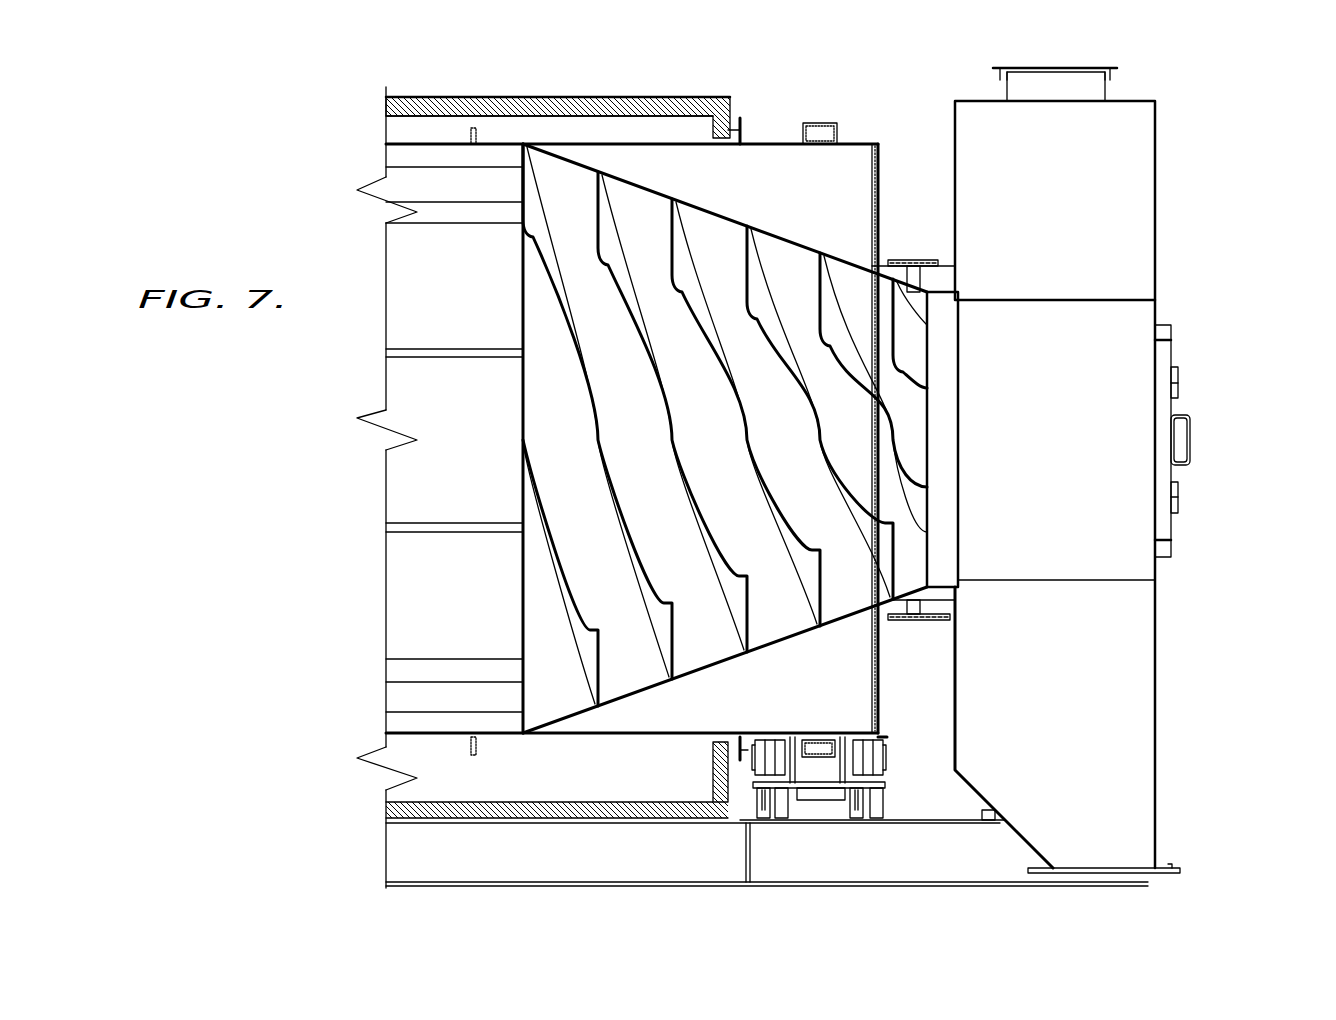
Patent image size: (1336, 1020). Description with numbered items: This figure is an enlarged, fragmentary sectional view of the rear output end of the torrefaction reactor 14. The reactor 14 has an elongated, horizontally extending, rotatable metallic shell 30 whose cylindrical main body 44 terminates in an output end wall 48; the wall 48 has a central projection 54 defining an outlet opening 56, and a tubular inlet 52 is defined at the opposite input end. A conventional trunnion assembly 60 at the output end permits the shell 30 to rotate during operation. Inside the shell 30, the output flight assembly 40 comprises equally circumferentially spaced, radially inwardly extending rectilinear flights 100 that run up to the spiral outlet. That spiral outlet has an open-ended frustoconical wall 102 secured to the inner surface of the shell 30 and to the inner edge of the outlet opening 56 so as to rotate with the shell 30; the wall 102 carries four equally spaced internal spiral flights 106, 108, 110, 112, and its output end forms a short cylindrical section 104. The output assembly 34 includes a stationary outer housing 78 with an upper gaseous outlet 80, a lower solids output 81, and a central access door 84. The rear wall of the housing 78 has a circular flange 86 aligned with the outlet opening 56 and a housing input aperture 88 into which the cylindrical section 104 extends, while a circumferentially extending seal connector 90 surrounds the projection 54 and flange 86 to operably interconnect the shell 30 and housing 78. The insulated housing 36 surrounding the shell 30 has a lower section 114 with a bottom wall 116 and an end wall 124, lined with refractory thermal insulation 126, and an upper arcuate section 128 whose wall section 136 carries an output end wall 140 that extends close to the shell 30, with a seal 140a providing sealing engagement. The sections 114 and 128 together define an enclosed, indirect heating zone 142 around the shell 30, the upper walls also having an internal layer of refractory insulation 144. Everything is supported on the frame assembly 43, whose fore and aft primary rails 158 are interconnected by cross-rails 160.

The torrefaction reactor 14 is at (296, 217).
The shell 30 is at (656, 399).
The output assembly 34 is at (1111, 478).
The insulative housing 36 is at (355, 98).
The output flight assembly 40 is at (737, 209).
The frame assembly 43 is at (378, 857).
The cylindrical main body 44 is at (650, 145).
The output end wall 48 is at (880, 192).
The tubular inlet 52 is at (915, 110).
The central projection 54 is at (889, 260).
The outlet opening 56 is at (957, 623).
The trunnion assembly 60 is at (905, 747).
The outer housing 78 is at (1158, 130).
The upper gaseous outlet 80 is at (1076, 76).
The lower solids output 81 is at (1128, 872).
The central access door 84 is at (1163, 475).
The circular flange 86 is at (950, 262).
The housing input aperture 88 is at (955, 597).
The seal connector 90 is at (922, 260).
The rectilinear flights 100 is at (470, 352).
The frustoconical wall 102 is at (784, 638).
The cylindrical section 104 is at (957, 462).
The spiral flight 106 is at (563, 642).
The spiral flight 108 is at (921, 505).
The spiral flight 110 is at (921, 350).
The spiral flight 112 is at (547, 231).
The lower section 114 is at (355, 748).
The bottom wall 116 is at (490, 820).
The end wall 124 is at (737, 792).
The refractory thermal insulation 126 is at (575, 812).
The upper arcuate section 128 is at (525, 414).
The wall section 136 is at (407, 96).
The output end wall 140 is at (740, 117).
The seal 140a is at (747, 132).
The indirect heating zone 142 is at (395, 128).
The refractory thermal insulation 144 is at (508, 104).
The primary rails 158 is at (907, 852).
The cross-rails 160 is at (750, 865).